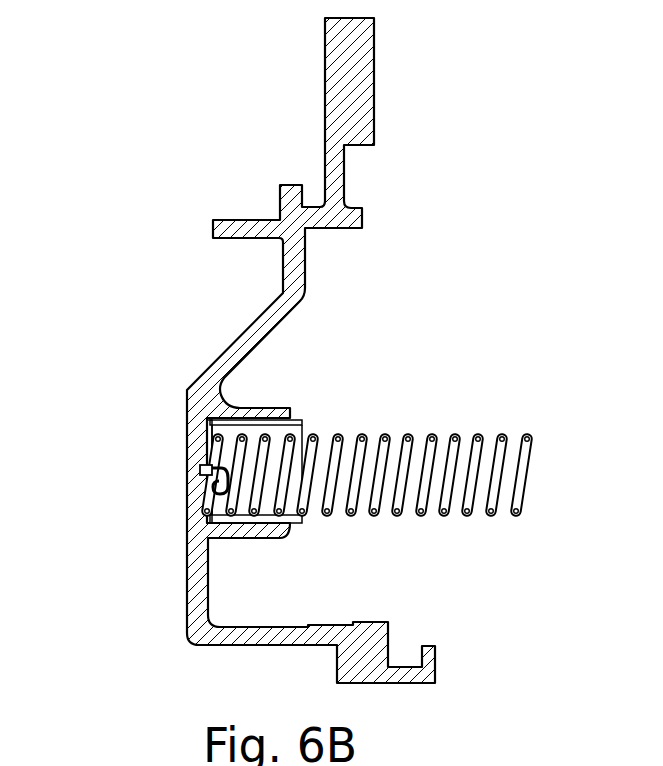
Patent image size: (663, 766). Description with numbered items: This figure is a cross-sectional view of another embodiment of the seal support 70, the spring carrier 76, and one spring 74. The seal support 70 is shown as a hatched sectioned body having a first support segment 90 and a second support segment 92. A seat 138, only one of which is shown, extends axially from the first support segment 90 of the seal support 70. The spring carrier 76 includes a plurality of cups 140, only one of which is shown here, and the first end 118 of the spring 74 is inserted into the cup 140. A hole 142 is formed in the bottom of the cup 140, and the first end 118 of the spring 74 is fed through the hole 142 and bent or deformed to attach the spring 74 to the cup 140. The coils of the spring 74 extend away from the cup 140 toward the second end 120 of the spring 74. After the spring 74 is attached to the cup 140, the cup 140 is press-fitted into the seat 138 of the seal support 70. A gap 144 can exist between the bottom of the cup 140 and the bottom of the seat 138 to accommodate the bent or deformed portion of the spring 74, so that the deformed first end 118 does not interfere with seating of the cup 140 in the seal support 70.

The seal support 70 is at (198, 380).
The spring 74 is at (422, 518).
The spring carrier 76 is at (296, 425).
The first support segment 90 is at (187, 515).
The second support segment 92 is at (392, 685).
The first end 118 is at (200, 473).
The second end 120 is at (522, 484).
The seat 138 is at (247, 528).
The cup 140 is at (296, 425).
The hole 142 is at (203, 457).
The gap 144 is at (205, 433).